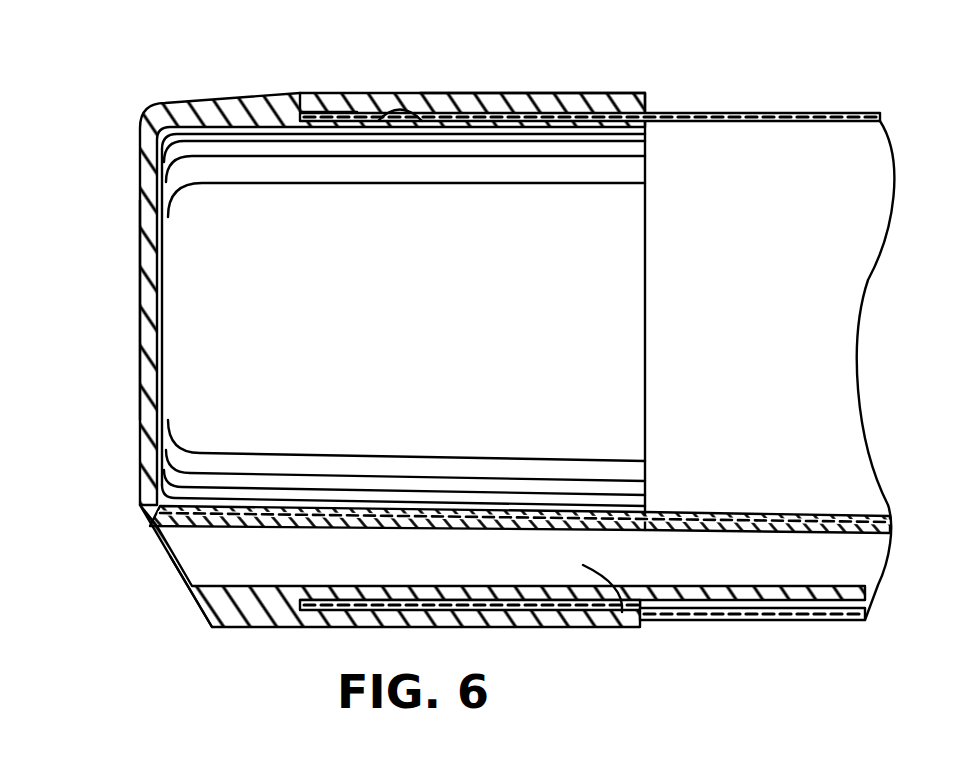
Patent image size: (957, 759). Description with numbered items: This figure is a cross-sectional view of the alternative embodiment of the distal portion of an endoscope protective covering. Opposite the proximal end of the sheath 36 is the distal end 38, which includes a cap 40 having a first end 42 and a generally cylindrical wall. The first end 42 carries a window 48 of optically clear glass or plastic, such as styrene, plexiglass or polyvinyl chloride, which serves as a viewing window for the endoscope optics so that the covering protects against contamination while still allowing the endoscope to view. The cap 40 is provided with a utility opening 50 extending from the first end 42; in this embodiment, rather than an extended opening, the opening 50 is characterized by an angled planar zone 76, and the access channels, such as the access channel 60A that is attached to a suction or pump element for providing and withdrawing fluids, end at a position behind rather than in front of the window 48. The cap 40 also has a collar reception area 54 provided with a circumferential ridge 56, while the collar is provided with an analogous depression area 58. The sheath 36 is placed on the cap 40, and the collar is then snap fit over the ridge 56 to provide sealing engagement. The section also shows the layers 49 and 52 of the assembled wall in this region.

The sheath 36 is at (735, 620).
The distal end 38 is at (512, 623).
The cap 40 is at (210, 97).
The first end 42 is at (138, 162).
The window 48 is at (138, 305).
The sealing strip 49 is at (313, 618).
The utility opening 50 is at (140, 546).
The inner tube 52 is at (608, 93).
The collar reception area 54 is at (358, 106).
The circumferential ridge 56 is at (400, 106).
The depression area 58 is at (437, 95).
The access channel 60A is at (626, 612).
The angled planar zone 76 is at (172, 594).